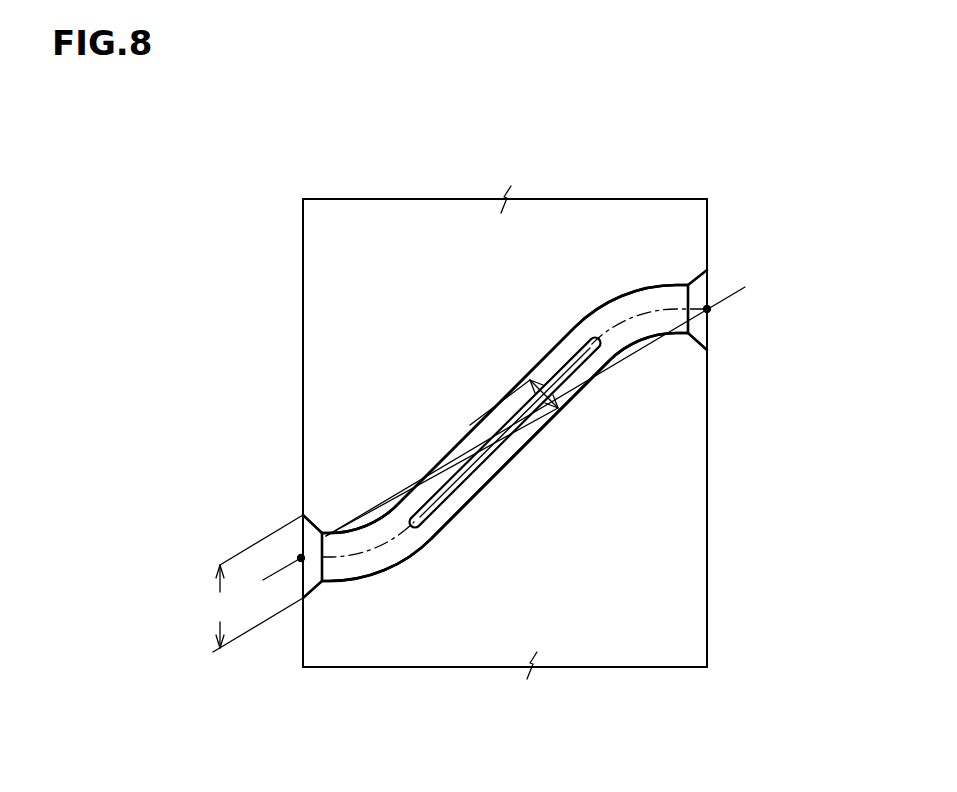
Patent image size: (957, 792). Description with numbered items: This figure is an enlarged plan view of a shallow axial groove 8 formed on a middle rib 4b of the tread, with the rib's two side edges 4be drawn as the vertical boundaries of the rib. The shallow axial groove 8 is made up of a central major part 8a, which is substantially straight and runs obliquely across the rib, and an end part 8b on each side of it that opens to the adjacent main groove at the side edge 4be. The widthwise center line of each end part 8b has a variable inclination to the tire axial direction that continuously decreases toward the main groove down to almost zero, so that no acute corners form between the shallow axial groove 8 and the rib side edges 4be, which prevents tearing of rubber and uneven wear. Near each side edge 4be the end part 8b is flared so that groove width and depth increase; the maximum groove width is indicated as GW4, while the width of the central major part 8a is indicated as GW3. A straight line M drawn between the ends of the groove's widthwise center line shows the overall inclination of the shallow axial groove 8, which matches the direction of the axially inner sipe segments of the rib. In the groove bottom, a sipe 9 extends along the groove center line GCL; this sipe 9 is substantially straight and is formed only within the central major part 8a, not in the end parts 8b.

The middle rib 4b is at (362, 222).
The rib side edge 4be is at (302, 478).
The shallow axial groove 8 is at (494, 410).
The end part 8b is at (665, 300).
The central major part 8a is at (514, 455).
The sipe 9 is at (445, 503).
The groove center line GCL is at (617, 325).
The straight line M is at (733, 295).
The width of the central major part GW3 is at (586, 404).
The maximum groove width GW4 is at (244, 583).